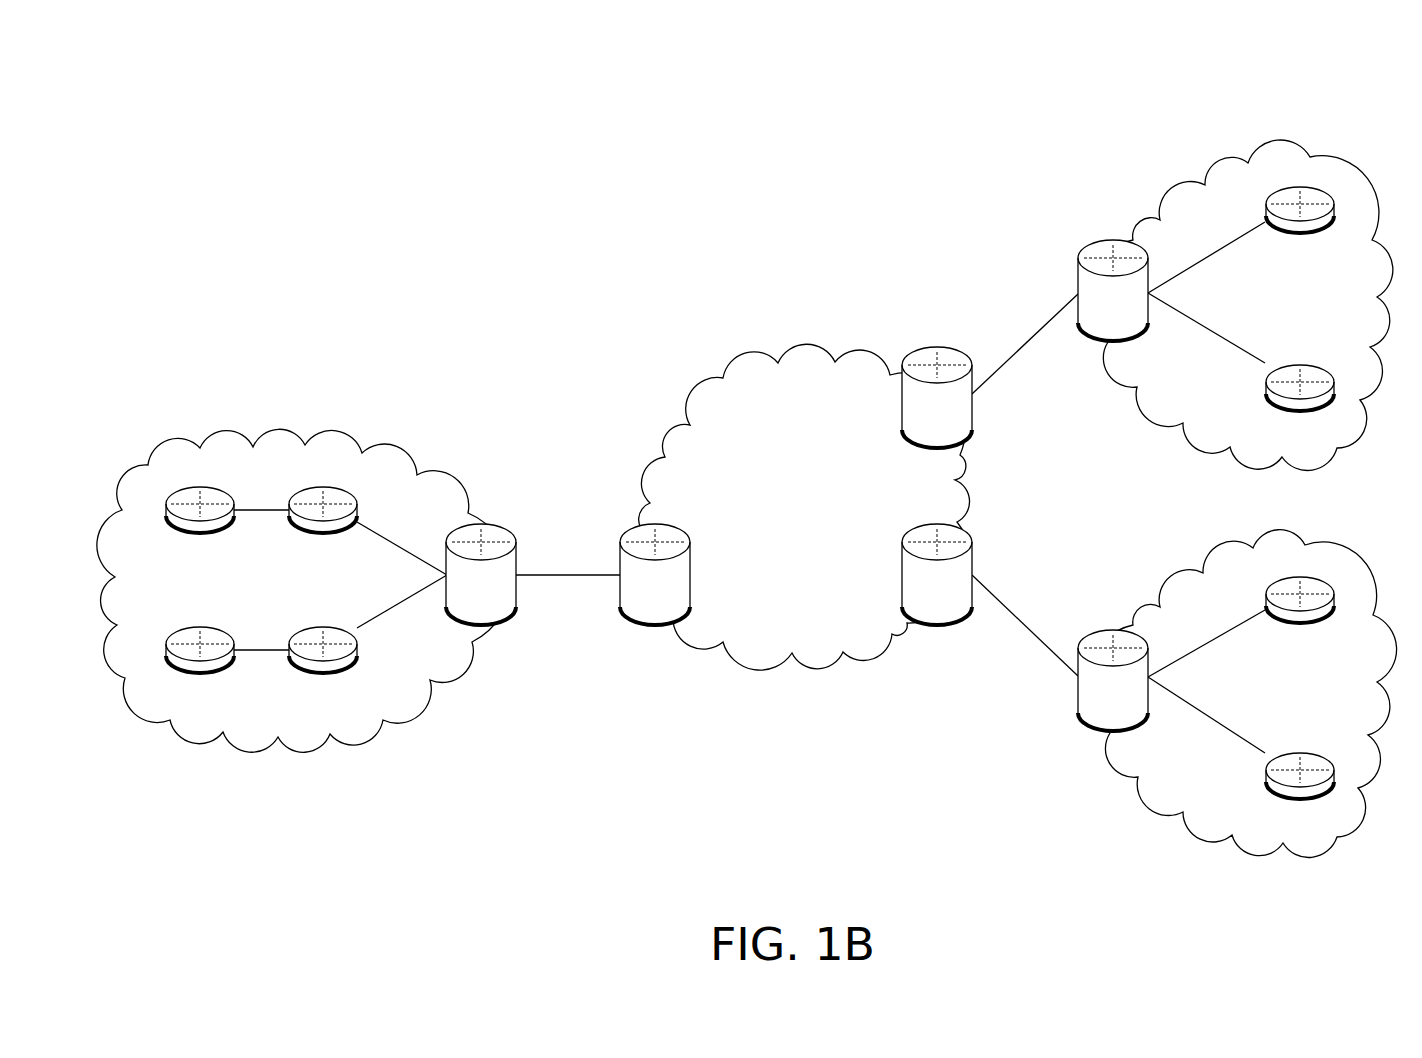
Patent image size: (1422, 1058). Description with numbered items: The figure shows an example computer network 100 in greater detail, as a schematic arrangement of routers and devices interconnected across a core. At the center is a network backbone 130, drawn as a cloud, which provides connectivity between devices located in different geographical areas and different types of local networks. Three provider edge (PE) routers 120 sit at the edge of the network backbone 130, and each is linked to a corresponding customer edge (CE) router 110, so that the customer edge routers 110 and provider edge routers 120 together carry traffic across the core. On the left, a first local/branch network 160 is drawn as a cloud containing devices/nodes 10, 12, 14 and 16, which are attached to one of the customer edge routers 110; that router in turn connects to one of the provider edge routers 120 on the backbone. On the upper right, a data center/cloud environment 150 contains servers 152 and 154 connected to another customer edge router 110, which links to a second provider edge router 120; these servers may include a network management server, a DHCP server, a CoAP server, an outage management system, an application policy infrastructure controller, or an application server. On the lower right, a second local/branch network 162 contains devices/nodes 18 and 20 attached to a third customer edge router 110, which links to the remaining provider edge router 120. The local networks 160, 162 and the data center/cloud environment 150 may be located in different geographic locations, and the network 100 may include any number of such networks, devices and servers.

The computer network 100 is at (1340, 91).
The customer edge (CE) routers 110 is at (1129, 327).
The provider edge (PE) routers 120 is at (953, 434).
The network backbone 130 is at (784, 532).
The data center/cloud environment 150 is at (1212, 159).
The server 152 is at (1300, 223).
The server 154 is at (1300, 401).
The local/branch network 160 is at (338, 429).
The local/branch network 162 is at (1130, 789).
The device/node 10 is at (200, 523).
The device/node 12 is at (323, 523).
The device/node 14 is at (200, 663).
The device/node 16 is at (323, 663).
The device/node 18 is at (1300, 789).
The device/node 20 is at (1300, 613).